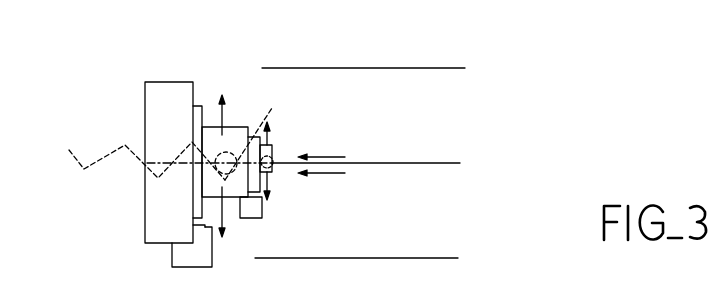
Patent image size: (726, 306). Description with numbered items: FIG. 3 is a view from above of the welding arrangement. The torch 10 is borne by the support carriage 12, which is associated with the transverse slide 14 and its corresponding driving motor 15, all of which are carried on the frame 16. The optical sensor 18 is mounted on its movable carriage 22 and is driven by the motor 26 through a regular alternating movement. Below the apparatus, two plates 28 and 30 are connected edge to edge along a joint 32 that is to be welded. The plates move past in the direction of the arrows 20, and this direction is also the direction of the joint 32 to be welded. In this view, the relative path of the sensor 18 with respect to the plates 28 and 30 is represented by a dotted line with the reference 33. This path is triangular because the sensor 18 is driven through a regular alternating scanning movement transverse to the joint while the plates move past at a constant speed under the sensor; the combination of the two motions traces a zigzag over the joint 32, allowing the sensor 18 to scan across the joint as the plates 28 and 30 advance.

The torch 10 is at (270, 117).
The support carriage 12 is at (234, 128).
The transverse slide 14 is at (198, 110).
The driving motor 15 is at (207, 254).
The frame 16 is at (162, 91).
The optical sensor 18 is at (275, 148).
The arrows 20 is at (321, 156).
The movable carriage 22 is at (272, 170).
The motor 26 is at (259, 198).
The plate 28 is at (357, 85).
The plate 30 is at (371, 246).
The joint 32 is at (373, 162).
The relative path of the sensor 33 is at (114, 157).